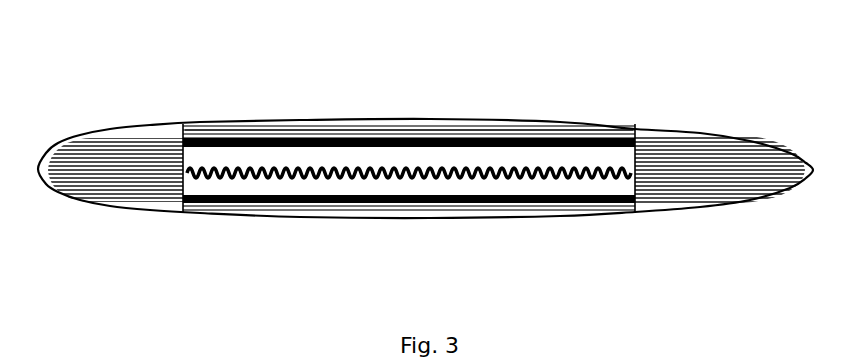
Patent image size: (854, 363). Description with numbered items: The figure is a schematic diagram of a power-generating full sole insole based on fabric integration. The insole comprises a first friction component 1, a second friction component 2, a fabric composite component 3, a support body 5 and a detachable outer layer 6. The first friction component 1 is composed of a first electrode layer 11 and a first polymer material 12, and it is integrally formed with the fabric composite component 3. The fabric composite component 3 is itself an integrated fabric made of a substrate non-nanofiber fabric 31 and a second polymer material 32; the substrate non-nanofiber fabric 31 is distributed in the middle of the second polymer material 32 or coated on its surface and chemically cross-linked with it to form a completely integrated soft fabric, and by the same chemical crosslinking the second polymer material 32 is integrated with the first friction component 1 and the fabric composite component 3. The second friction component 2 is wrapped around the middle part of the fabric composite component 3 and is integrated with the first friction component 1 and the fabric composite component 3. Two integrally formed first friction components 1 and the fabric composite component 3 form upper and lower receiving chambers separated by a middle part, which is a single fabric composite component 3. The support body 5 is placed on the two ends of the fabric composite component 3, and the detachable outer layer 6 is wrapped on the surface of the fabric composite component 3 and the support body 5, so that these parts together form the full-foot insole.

The first friction component 1 is at (409, 113).
The first electrode layer 11 is at (249, 147).
The first polymer material 12 is at (292, 147).
The second friction component 2 is at (532, 170).
The fabric composite component 3 is at (409, 84).
The substrate non-nanofiber fabric 31 is at (367, 138).
The second polymer material 32 is at (404, 140).
The support body 5 is at (715, 135).
The detachable outer layer 6 is at (665, 129).